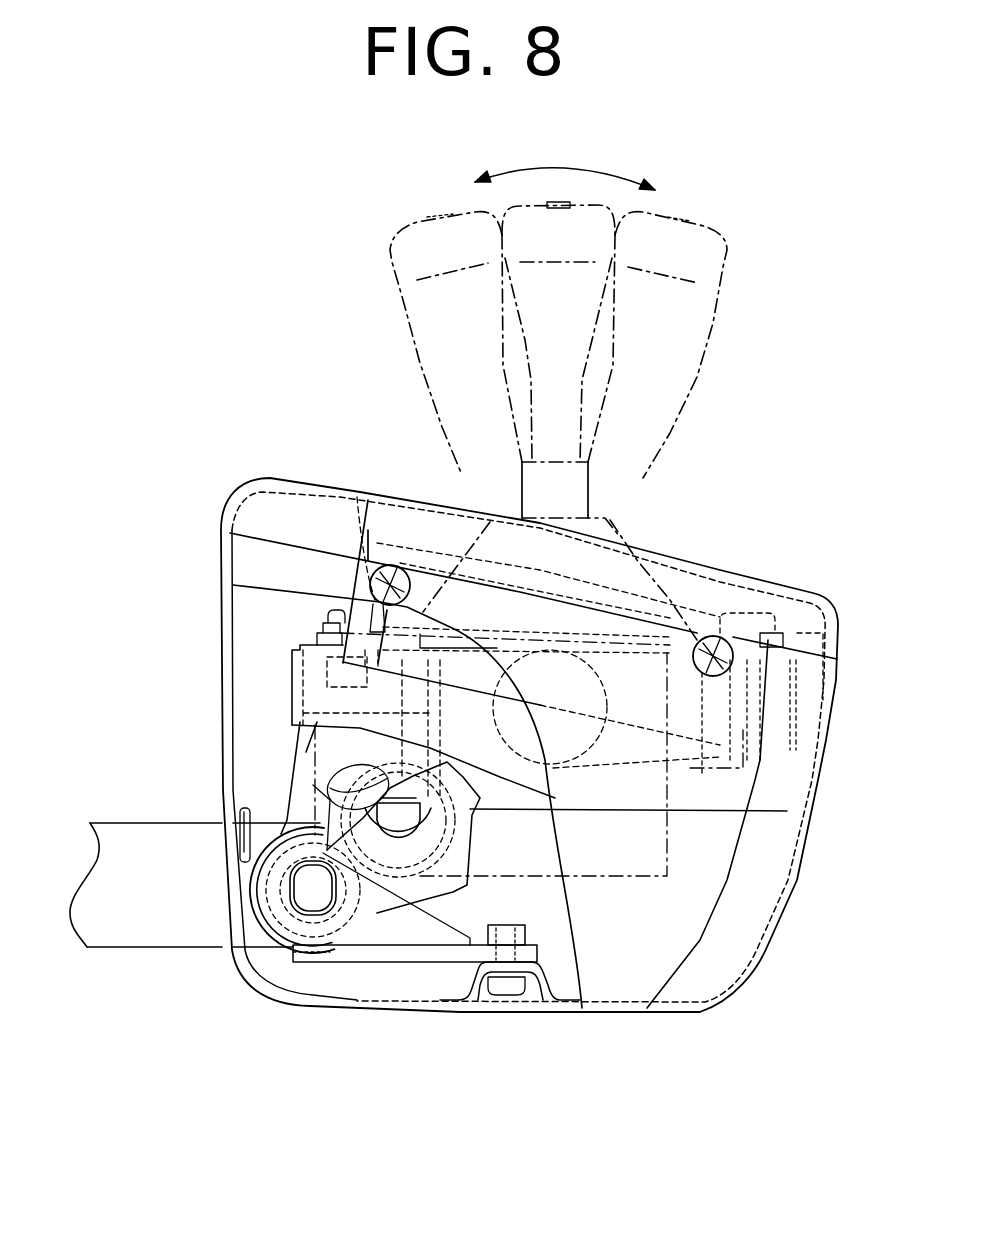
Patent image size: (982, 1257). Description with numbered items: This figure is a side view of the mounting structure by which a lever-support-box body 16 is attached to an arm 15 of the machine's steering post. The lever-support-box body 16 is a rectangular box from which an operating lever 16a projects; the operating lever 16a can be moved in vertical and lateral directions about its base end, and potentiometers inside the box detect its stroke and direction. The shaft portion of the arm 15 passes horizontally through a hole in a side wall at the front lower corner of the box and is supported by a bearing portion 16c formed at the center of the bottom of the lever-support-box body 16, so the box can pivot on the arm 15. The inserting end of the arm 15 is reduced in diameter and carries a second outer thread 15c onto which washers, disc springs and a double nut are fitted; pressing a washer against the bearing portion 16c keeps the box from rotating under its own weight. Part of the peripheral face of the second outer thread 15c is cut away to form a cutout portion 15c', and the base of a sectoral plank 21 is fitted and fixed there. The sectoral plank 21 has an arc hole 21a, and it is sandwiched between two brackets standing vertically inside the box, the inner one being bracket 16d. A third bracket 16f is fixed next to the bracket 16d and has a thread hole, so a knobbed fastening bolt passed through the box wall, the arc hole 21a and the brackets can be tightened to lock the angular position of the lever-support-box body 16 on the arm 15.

The arm 15 is at (127, 933).
The second outer thread 15c is at (338, 978).
The cutout portion 15c' is at (251, 941).
The lever-support-box body 16 is at (715, 563).
The operating lever 16a is at (702, 357).
The bearing portion 16c is at (283, 935).
The bracket 16d is at (395, 760).
The third bracket 16f is at (390, 763).
The sectoral plank 21 is at (400, 900).
The arc hole 21a is at (313, 785).